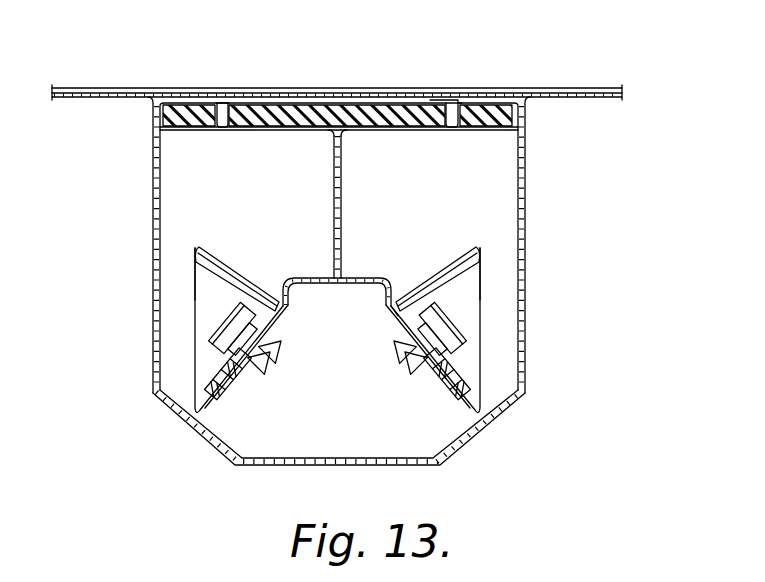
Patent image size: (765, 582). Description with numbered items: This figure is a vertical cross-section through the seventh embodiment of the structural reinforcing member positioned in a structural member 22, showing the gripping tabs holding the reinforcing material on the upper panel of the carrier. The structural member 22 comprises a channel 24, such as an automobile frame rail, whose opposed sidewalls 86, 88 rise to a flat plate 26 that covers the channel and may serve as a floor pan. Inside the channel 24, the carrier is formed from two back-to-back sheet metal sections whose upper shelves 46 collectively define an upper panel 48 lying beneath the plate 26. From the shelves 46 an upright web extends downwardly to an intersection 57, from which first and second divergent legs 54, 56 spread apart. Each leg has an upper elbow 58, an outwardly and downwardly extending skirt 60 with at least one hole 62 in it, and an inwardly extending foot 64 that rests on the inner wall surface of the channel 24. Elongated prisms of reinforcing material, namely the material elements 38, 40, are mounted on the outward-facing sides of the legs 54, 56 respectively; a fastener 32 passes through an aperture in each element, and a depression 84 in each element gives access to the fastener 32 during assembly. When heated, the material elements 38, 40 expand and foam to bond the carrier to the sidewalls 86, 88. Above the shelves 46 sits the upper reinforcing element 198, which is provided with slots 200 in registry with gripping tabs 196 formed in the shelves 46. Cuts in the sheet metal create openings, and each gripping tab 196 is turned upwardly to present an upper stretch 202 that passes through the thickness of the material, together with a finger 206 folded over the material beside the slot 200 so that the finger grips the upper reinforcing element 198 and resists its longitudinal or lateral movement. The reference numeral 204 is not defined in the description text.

The flat plate 26 is at (173, 88).
The structural member 22 is at (324, 281).
The sidewall 88 is at (160, 220).
The sidewall 86 is at (525, 212).
The channel 24 is at (523, 267).
The foot 64 is at (212, 437).
The upper panel 48 is at (307, 127).
The upper stretch 202 is at (203, 131).
The upper shelf 46 is at (267, 131).
The upper reinforcing element 198 is at (207, 103).
The gripping tab 196 is at (227, 100).
The slot 200 is at (220, 103).
The clip 204 is at (437, 100).
The finger 206 is at (333, 195).
The intersection 57 is at (335, 283).
The second divergent leg 56 is at (267, 317).
The hole 62 is at (408, 327).
The material element 40 is at (218, 260).
The material element 38 is at (453, 260).
The upper elbow 58 is at (395, 270).
The depression 84 is at (210, 317).
The skirt 60 is at (220, 383).
The first divergent leg 54 is at (448, 392).
The fastener 32 is at (263, 372).